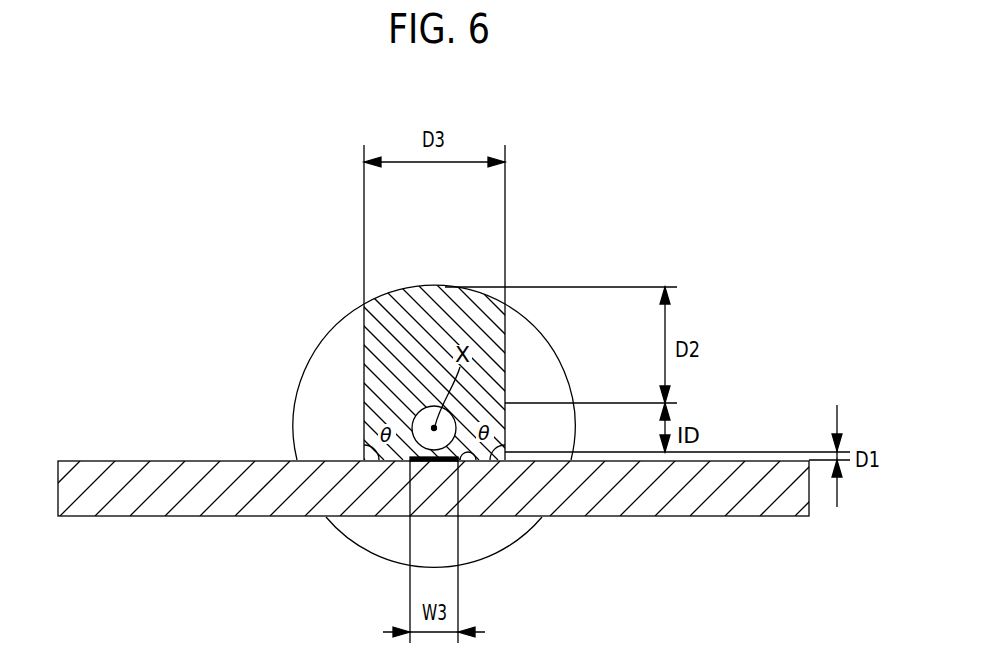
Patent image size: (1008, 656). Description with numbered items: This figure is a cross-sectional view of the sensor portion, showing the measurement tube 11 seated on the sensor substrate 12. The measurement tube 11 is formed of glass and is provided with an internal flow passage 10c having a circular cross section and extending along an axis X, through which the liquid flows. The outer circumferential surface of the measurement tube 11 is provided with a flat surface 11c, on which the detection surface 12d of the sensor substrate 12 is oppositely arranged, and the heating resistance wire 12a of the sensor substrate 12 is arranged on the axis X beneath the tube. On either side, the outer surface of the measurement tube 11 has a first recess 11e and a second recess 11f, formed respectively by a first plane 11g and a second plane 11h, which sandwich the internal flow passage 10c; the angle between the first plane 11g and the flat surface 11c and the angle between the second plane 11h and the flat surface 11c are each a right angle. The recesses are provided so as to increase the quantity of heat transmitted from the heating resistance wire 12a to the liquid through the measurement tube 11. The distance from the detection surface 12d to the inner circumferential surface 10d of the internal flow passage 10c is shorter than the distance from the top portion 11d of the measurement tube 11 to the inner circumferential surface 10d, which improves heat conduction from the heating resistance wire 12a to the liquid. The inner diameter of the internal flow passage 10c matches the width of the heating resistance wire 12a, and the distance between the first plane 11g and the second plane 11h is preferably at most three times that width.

The measurement tube 11 is at (429, 376).
The flat surface 11c is at (373, 462).
The top portion 11d is at (443, 287).
The first recess 11e is at (340, 335).
The second recess 11f is at (520, 341).
The first plane 11g is at (364, 421).
The second plane 11h is at (505, 427).
The internal flow passage 10c is at (425, 410).
The inner circumferential surface 10d is at (412, 424).
The sensor substrate 12 is at (752, 461).
The heating resistance wire 12a is at (437, 461).
The detection surface 12d is at (477, 461).